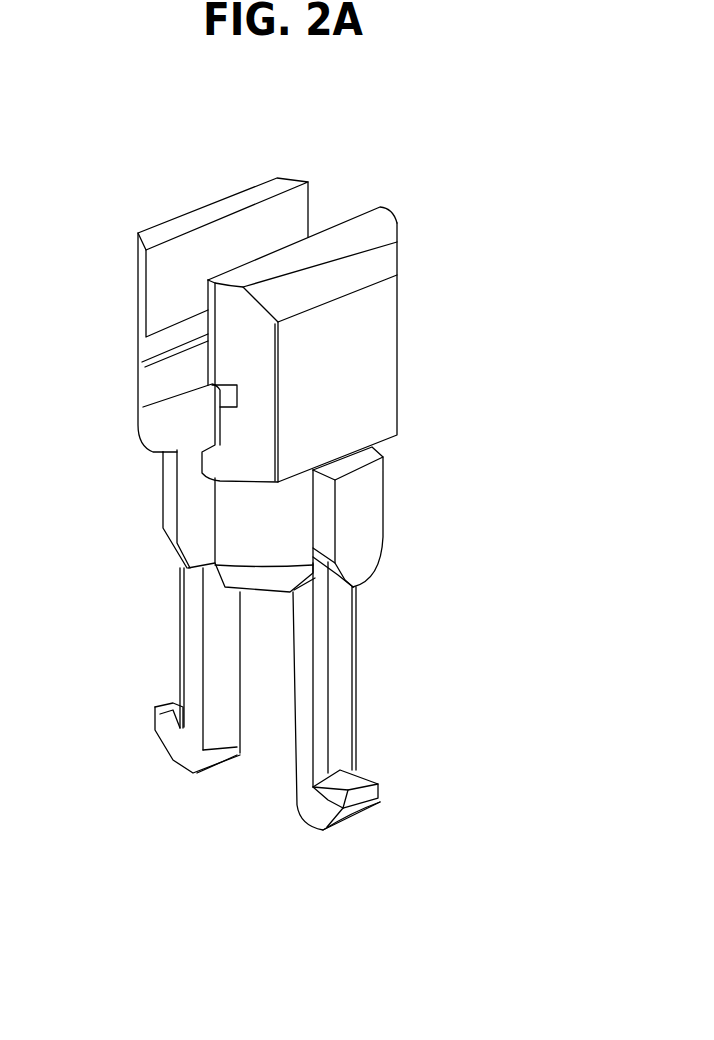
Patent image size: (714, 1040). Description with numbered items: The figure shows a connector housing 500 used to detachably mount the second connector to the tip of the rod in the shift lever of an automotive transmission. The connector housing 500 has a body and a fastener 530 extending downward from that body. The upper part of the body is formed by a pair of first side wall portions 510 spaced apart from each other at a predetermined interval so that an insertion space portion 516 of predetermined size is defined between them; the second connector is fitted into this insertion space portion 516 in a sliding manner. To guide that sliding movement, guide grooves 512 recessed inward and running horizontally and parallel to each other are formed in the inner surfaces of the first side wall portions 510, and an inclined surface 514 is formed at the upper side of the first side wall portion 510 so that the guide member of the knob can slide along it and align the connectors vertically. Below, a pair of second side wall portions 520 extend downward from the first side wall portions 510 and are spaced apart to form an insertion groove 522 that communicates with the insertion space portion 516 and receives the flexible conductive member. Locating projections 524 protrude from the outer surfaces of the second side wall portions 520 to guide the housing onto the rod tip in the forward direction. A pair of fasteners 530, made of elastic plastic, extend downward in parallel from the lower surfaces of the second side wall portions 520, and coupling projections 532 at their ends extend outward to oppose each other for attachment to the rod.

The connector housing 500 is at (440, 325).
The first side wall portions 510 is at (385, 390).
The guide grooves 512 is at (153, 347).
The inclined surface 514 is at (385, 250).
The insertion space portion 516 is at (168, 384).
The second side wall portions 520 is at (268, 555).
The insertion groove 522 is at (194, 501).
The locating projections 524 is at (372, 508).
The fasteners 530 is at (342, 710).
The coupling projections 532 is at (352, 817).